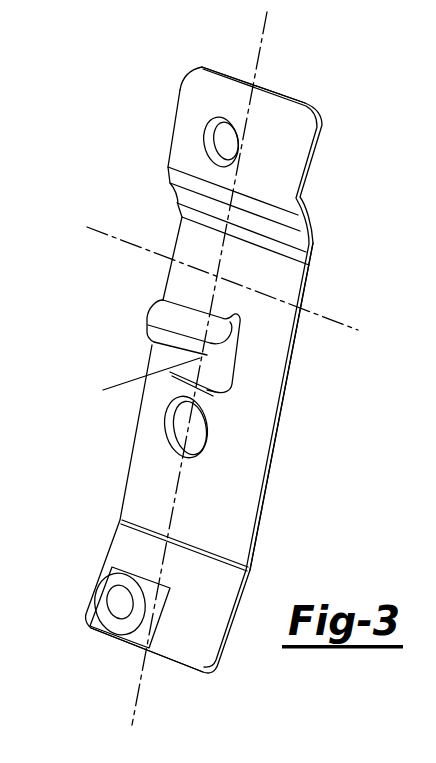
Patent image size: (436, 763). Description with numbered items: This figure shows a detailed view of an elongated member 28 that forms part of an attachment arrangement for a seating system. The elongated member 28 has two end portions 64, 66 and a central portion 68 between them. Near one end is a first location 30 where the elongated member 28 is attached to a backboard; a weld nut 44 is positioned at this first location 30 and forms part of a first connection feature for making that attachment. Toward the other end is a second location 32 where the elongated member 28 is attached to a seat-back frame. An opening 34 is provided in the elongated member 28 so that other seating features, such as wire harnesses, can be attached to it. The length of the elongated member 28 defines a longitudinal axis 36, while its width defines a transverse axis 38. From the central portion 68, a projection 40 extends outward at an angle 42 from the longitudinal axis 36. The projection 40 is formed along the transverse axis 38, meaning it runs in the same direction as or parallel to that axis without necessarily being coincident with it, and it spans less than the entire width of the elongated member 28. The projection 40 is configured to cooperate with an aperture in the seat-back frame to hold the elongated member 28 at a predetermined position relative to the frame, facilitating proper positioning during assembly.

The elongated member 28 is at (336, 108).
The first location 30 is at (117, 603).
The second location 32 is at (207, 142).
The opening 34 is at (173, 428).
The longitudinal axis 36 is at (258, 43).
The transverse axis 38 is at (87, 227).
The projection 40 is at (150, 320).
The angle 42 is at (180, 382).
The weld nut 44 is at (107, 623).
The end portion 64 is at (275, 95).
The end portion 66 is at (177, 672).
The central portion 68 is at (290, 408).